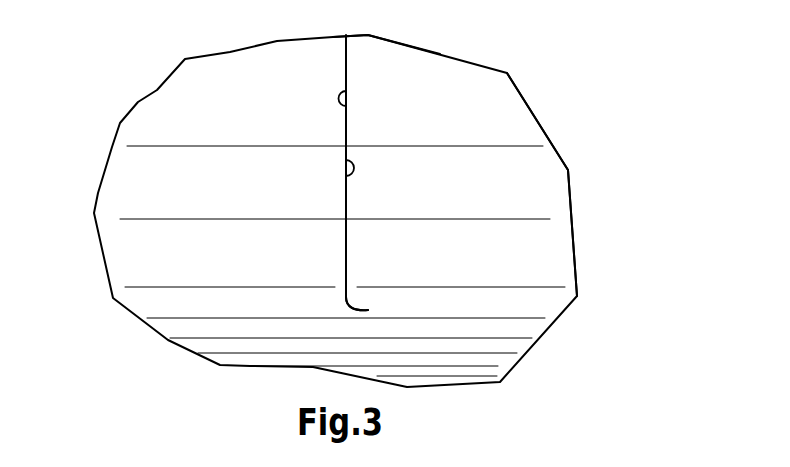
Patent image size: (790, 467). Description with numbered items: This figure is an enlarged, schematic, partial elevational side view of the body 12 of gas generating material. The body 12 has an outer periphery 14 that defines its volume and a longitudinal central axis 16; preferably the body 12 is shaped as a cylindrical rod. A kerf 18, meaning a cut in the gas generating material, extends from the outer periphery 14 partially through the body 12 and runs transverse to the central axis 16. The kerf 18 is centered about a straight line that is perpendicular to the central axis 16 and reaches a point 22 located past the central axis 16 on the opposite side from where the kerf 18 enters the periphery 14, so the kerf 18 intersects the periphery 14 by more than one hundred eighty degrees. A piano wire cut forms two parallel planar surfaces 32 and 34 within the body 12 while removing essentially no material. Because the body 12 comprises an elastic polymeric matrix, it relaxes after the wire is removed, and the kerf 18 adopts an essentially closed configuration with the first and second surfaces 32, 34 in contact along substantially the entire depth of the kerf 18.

The body of gas generating material 12 is at (177, 262).
The outer periphery 14 is at (550, 197).
The longitudinal central axis 16 is at (346, 197).
The kerf 18 is at (346, 65).
The point 22 is at (368, 310).
The planar surface 32 is at (347, 88).
The planar surface 34 is at (342, 177).